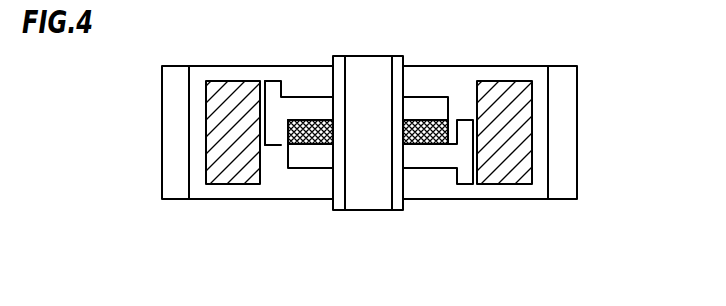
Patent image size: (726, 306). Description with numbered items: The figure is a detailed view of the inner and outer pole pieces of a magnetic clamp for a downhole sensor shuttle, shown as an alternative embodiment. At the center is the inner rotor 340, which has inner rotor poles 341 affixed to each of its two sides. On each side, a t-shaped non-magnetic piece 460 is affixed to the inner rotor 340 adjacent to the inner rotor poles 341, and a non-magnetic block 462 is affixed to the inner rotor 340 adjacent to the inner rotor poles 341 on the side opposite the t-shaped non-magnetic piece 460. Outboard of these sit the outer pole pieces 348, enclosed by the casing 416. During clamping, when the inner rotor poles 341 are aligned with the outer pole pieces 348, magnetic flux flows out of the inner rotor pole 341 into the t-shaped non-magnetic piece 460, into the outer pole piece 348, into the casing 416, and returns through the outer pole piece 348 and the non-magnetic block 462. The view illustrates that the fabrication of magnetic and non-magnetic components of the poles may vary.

The inner rotor 340 is at (356, 211).
The inner rotor poles 341 is at (303, 117).
The outer pole pieces 348 is at (204, 106).
The casing 416 is at (563, 107).
The t-shaped non-magnetic piece 460 is at (273, 148).
The non-magnetic block 462 is at (429, 103).